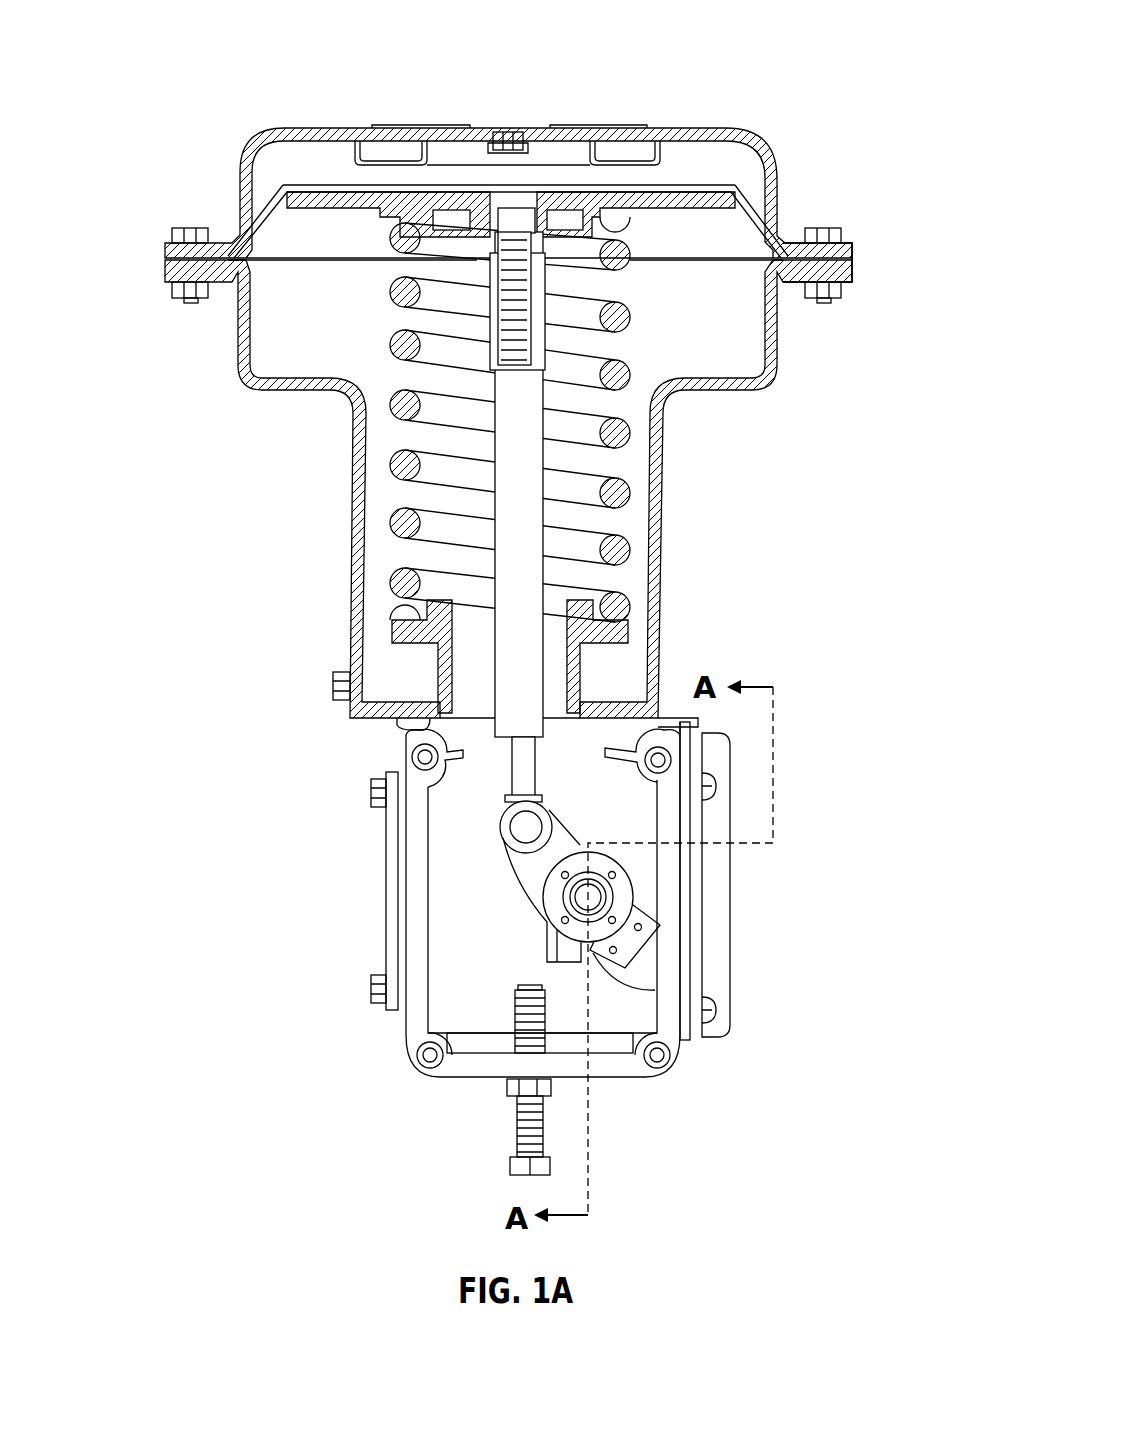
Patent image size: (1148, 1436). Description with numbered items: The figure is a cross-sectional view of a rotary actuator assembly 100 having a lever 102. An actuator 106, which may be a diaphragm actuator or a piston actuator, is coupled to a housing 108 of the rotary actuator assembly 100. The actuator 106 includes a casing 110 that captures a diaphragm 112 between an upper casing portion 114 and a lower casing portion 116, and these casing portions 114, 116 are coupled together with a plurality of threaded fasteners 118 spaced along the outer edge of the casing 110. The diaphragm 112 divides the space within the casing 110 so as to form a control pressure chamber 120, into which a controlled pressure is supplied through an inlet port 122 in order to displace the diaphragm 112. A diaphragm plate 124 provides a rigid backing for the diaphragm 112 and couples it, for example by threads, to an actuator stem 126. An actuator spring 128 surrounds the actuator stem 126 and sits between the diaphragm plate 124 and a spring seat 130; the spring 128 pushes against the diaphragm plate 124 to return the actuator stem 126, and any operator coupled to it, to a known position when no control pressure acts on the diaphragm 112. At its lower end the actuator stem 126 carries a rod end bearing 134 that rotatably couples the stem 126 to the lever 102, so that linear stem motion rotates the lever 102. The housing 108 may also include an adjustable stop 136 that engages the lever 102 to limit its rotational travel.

The rotary actuator assembly 100 is at (173, 34).
The lever 102 is at (530, 890).
The actuator 106 is at (805, 192).
The housing 108 is at (403, 1037).
The casing 110 is at (857, 249).
The diaphragm 112 is at (748, 210).
The upper casing portion 114 is at (258, 152).
The lower casing portion 116 is at (238, 353).
The threaded fasteners 118 is at (193, 228).
The control pressure chamber 120 is at (708, 152).
The inlet port 122 is at (510, 131).
The diaphragm plate 124 is at (650, 213).
The actuator stem 126 is at (545, 508).
The actuator spring 128 is at (632, 430).
The spring seat 130 is at (628, 630).
The rod end bearing 134 is at (508, 846).
The adjustable stop 136 is at (507, 1165).